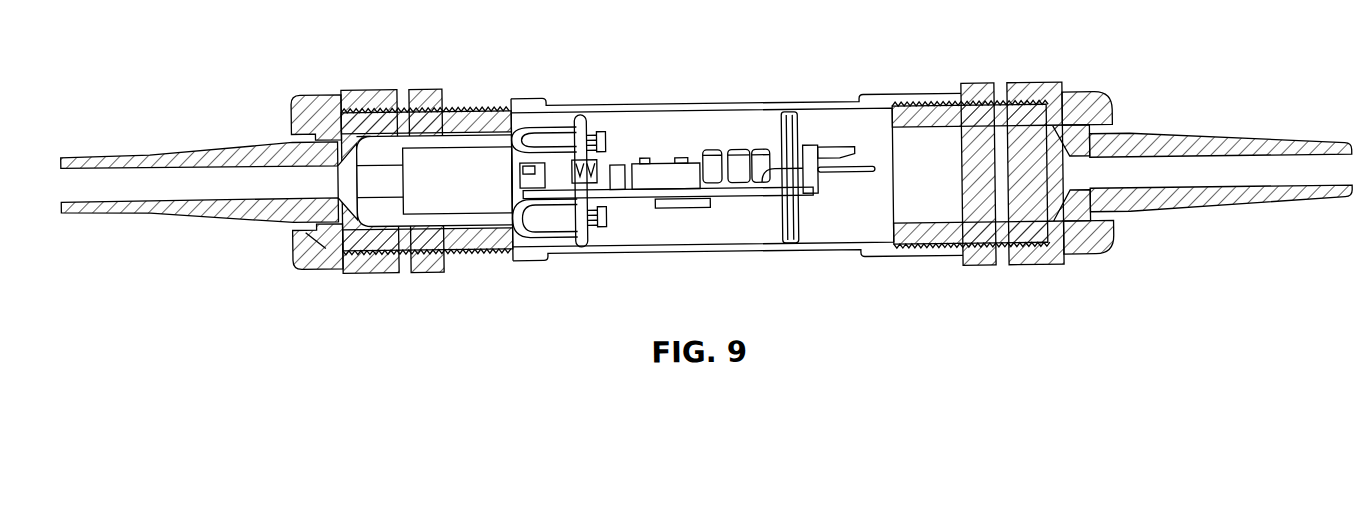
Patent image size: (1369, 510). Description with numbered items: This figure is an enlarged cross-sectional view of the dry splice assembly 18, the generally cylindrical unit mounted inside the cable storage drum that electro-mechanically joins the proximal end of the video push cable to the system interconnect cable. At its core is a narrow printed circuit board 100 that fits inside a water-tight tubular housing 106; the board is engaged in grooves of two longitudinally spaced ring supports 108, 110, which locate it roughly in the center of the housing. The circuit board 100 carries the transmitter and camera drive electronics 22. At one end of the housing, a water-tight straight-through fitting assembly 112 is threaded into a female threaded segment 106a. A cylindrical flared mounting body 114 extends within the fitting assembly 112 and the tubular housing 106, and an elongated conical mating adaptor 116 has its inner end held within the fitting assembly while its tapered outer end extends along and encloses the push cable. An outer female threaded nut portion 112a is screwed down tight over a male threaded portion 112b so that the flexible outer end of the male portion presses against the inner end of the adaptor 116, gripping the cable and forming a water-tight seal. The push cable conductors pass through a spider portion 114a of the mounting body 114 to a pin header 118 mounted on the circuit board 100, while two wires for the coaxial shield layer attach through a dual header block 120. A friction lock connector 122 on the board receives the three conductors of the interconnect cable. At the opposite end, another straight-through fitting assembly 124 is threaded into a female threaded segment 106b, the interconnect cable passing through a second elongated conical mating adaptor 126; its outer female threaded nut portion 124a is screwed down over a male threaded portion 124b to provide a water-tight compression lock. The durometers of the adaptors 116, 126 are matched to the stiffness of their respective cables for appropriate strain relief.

The dry splice assembly 18 is at (706, 188).
The transmitter and camera drive electronics 22 is at (696, 135).
The printed circuit board 100 is at (725, 197).
The tubular housing 106 is at (827, 260).
The female threaded segment 106a is at (485, 99).
The female threaded segment 106b is at (913, 96).
The ring support 108 is at (592, 114).
The ring support 110 is at (802, 126).
The straight-through fitting assembly 112 is at (304, 180).
The outer female threaded nut portion 112a is at (363, 88).
The male threaded portion 112b is at (337, 241).
The cylindrical flared mounting body 114 is at (432, 221).
The spider portion 114a is at (558, 116).
The elongated conical mating adaptor 116 is at (137, 146).
The pin header 118 is at (537, 170).
The dual header block 120 is at (607, 157).
The friction lock connector 122 is at (818, 178).
The straight-through fitting assembly 124 is at (1076, 83).
The outer female threaded nut portion 124a is at (1110, 260).
The male threaded portion 124b is at (1015, 231).
The elongated conical mating adaptor 126 is at (1252, 202).